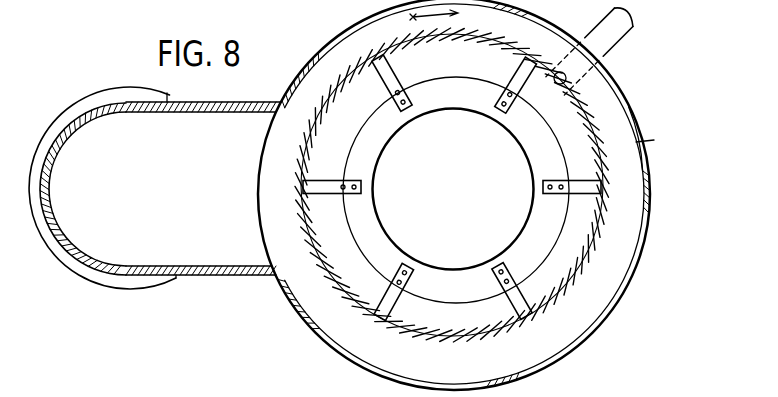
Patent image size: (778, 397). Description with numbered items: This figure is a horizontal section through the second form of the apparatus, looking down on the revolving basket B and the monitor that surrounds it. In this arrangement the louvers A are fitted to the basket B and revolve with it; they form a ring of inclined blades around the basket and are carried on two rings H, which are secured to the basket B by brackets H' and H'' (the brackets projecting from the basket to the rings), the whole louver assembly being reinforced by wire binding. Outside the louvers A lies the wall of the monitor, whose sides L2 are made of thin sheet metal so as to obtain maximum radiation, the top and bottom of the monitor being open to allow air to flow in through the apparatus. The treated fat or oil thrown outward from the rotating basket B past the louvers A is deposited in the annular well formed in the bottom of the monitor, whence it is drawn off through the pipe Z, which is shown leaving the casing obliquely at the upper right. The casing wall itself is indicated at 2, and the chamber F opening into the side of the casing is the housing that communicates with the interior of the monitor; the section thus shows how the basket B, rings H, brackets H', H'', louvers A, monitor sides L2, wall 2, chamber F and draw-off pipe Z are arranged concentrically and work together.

The feed housing F is at (155, 188).
The basket B is at (456, 190).
The rings H is at (496, 188).
The brackets H' is at (332, 205).
The paddle blade H'' is at (530, 85).
The louvers A is at (606, 160).
The sides of the monitor L2 is at (652, 139).
The pipe Z is at (612, 40).
The casing wall 2 is at (652, 202).